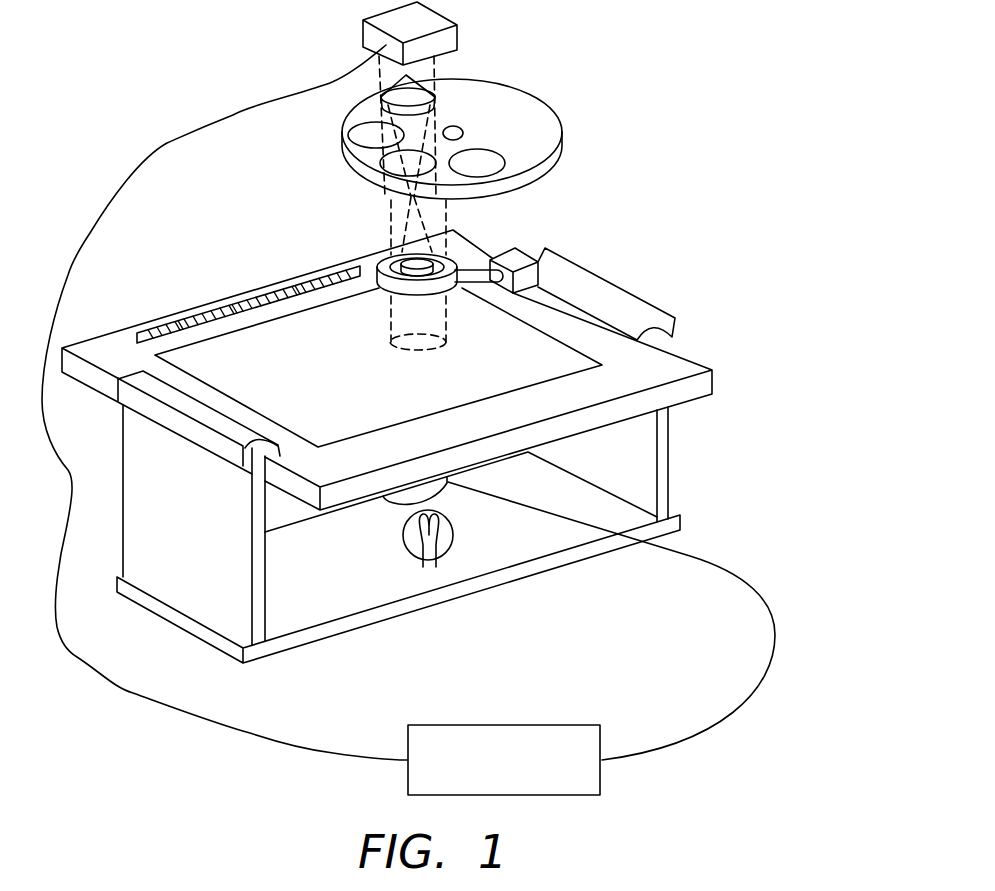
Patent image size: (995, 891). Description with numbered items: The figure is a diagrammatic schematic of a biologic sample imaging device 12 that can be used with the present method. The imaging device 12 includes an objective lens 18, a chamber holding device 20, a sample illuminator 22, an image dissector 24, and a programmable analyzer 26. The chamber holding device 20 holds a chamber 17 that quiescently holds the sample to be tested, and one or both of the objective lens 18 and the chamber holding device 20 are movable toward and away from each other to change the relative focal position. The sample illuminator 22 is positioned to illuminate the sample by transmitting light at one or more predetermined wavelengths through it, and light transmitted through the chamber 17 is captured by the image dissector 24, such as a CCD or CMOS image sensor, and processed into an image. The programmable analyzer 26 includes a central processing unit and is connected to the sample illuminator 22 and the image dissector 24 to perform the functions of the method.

The imaging device 12 is at (671, 80).
The chamber 17 is at (237, 358).
The objective lens 18 is at (455, 257).
The chamber holding device 20 is at (680, 348).
The sample illuminator 22 is at (450, 548).
The image dissector 24 is at (440, 68).
The programmable analyzer 26 is at (600, 725).